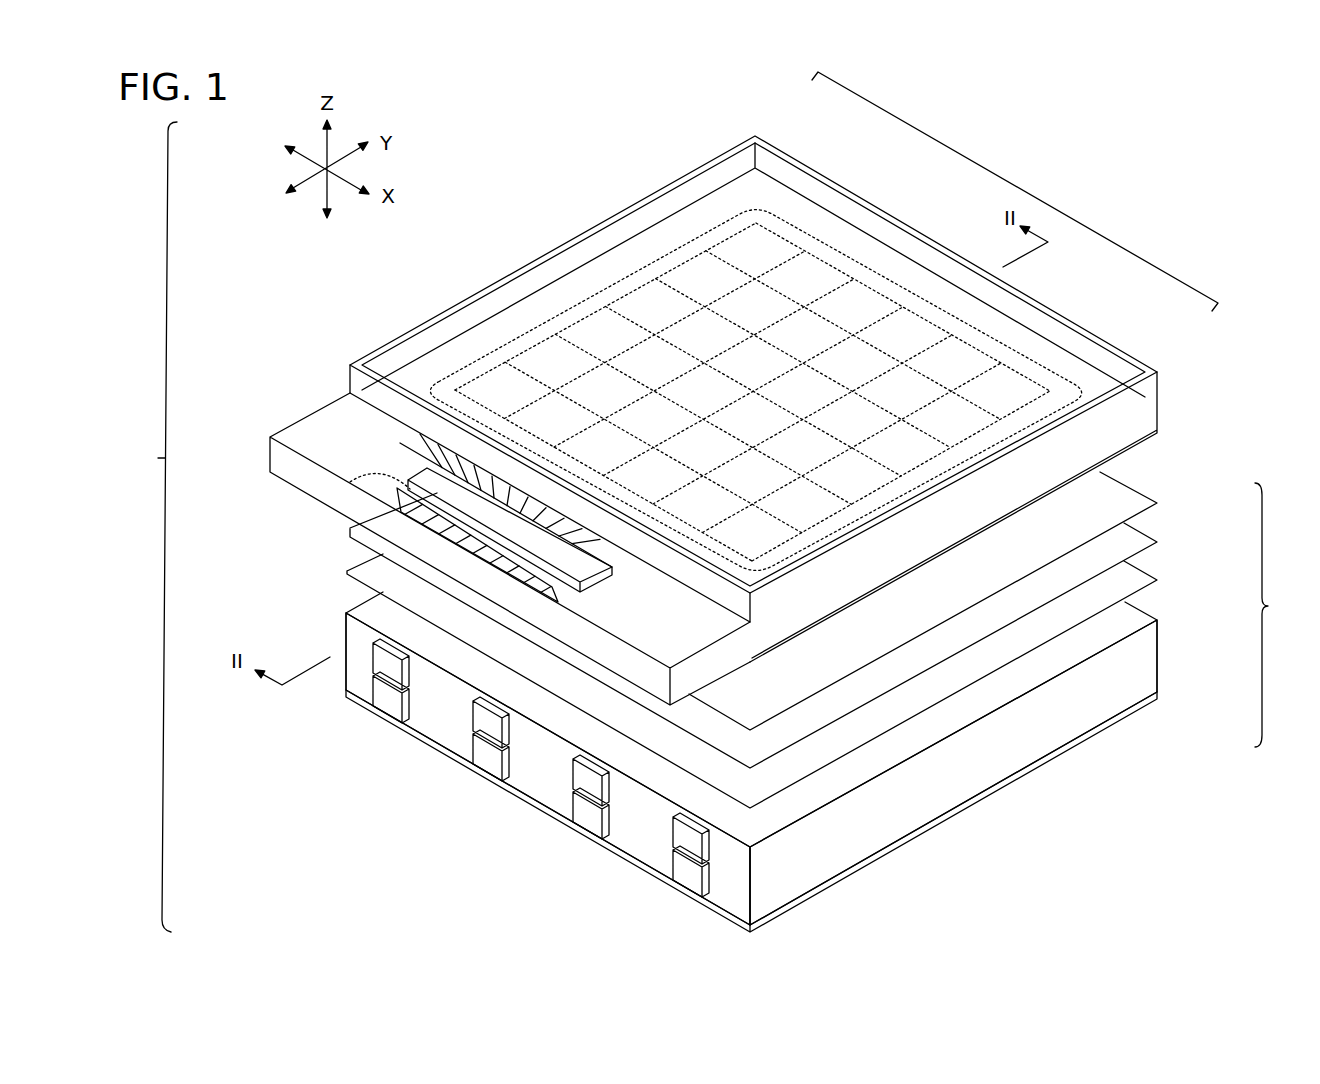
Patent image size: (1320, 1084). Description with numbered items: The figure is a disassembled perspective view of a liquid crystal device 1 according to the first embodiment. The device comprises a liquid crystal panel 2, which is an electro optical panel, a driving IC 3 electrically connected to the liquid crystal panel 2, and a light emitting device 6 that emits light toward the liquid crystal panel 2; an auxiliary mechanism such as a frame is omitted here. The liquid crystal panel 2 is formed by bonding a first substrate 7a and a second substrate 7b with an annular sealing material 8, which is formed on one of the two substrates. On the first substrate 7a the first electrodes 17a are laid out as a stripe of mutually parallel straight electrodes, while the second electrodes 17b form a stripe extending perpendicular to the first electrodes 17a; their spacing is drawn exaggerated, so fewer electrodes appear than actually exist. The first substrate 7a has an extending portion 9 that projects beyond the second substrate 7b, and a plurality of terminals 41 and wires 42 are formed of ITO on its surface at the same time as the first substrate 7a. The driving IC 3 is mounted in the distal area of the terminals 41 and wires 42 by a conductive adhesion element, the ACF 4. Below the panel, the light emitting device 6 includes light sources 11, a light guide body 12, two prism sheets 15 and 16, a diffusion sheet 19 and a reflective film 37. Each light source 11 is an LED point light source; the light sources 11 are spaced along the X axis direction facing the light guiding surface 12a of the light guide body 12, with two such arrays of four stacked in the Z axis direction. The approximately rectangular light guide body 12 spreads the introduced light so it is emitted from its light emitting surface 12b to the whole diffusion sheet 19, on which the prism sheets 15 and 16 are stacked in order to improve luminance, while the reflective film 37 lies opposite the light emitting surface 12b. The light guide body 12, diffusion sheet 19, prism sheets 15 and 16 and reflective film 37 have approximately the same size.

The liquid crystal device 1 is at (160, 527).
The liquid crystal panel 2 is at (1045, 181).
The driving IC 3 is at (418, 470).
The ACF 4 is at (350, 482).
The light emitting device 6 is at (1271, 615).
The first substrate 7a is at (1165, 414).
The second substrate 7b is at (1162, 380).
The sealing material 8 is at (1033, 360).
The extending portion 9 is at (346, 384).
The light source 11 is at (583, 827).
The light guide body 12 is at (1147, 661).
The light guiding surface 12a is at (650, 838).
The light emitting surface 12b is at (917, 734).
The prism sheet 15 is at (1161, 550).
The prism sheet 16 is at (1161, 511).
The first electrodes 17a is at (973, 432).
The second electrodes 17b is at (735, 268).
The diffusion sheet 19 is at (1161, 590).
The reflective film 37 is at (1143, 705).
The terminals 41 is at (350, 538).
The wires 42 is at (616, 570).